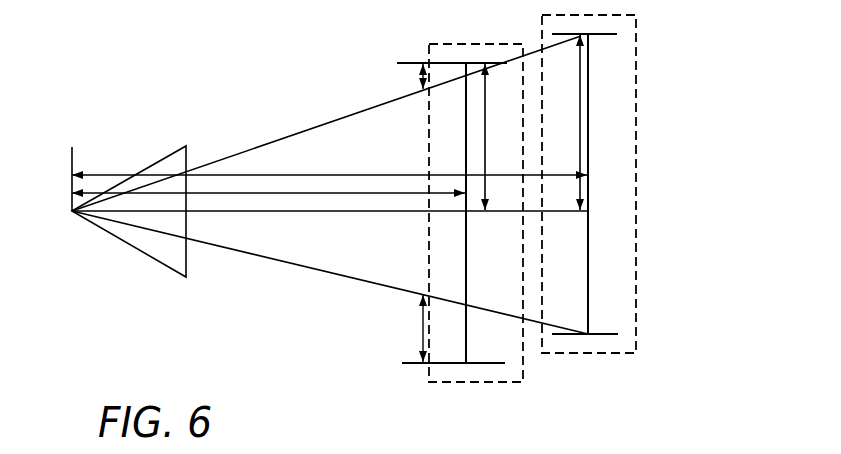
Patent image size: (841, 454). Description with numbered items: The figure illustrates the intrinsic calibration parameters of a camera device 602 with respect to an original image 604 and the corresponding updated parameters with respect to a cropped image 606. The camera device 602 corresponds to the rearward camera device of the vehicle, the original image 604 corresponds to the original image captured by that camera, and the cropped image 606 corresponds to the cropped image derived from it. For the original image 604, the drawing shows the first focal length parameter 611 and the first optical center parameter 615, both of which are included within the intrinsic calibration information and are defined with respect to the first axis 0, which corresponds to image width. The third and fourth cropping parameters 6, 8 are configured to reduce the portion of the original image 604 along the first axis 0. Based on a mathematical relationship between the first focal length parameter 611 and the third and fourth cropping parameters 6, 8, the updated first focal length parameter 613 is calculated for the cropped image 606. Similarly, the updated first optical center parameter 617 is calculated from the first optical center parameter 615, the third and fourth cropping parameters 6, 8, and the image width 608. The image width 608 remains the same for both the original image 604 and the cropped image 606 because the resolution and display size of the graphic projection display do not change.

The camera device 602 is at (138, 252).
The original image 604 is at (478, 386).
The cropped image 606 is at (588, 357).
The image width 608 is at (462, 270).
The first focal length parameter 611 is at (280, 195).
The updated first focal length parameter 613 is at (292, 173).
The first optical center parameter 615 is at (493, 145).
The updated first optical center parameter 617 is at (585, 87).
The third cropping parameter 6 is at (419, 77).
The fourth cropping parameter 8 is at (418, 335).
The first axis 0 is at (462, 233).